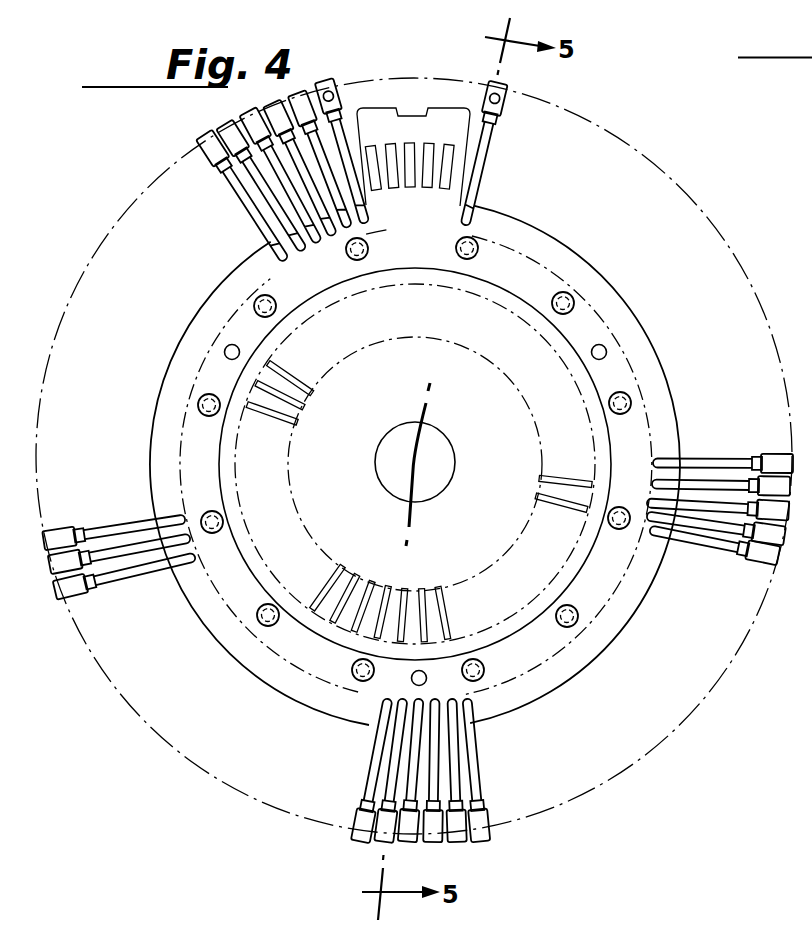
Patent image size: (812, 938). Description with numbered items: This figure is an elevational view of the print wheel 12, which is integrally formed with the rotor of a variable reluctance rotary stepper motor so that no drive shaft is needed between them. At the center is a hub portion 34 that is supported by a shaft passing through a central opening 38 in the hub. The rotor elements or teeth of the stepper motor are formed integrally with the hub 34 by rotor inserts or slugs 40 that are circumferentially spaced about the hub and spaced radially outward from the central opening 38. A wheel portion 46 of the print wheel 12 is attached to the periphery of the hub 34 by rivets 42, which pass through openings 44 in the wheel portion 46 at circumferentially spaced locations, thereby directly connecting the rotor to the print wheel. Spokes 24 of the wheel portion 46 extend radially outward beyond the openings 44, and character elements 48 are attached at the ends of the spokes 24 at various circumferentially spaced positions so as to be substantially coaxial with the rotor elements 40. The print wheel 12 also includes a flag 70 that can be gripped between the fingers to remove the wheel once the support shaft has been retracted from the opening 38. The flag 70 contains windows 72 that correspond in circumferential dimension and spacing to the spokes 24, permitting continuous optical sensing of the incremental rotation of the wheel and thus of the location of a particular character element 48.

The print wheel 12 is at (620, 290).
The spokes 24 is at (710, 480).
The central hub portion 34 is at (572, 410).
The central opening 38 is at (450, 442).
The rotor inserts or slugs 40 is at (276, 395).
The rivets 42 is at (352, 674).
The openings 44 is at (424, 456).
The wheel portion 46 is at (525, 235).
The character elements 48 is at (278, 100).
The flag 70 is at (383, 125).
The windows 72 is at (445, 145).